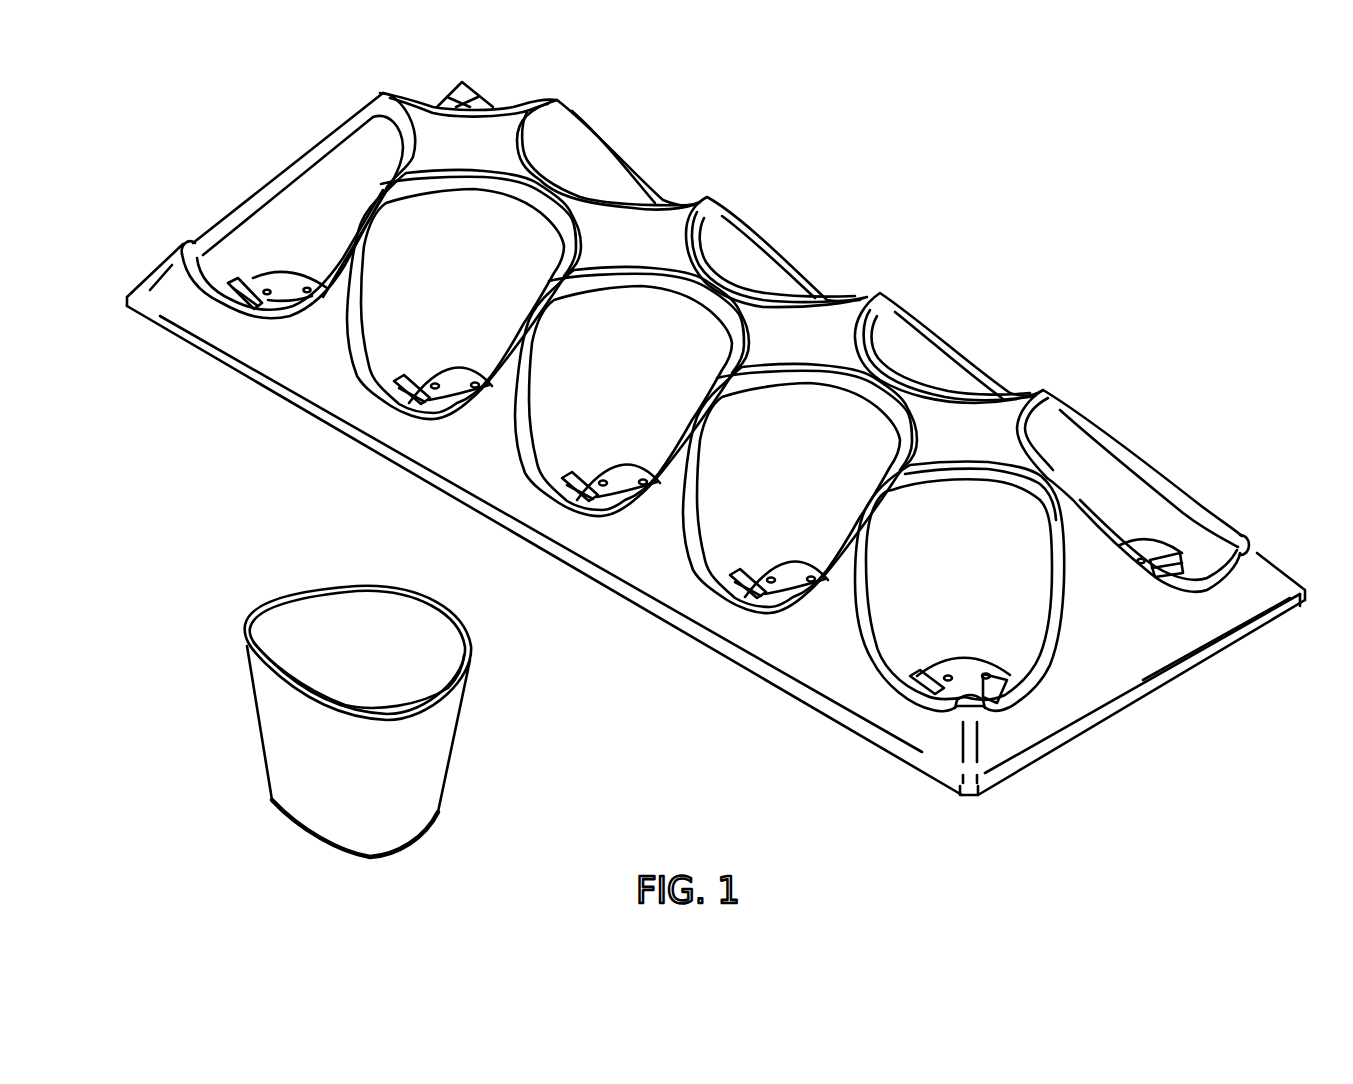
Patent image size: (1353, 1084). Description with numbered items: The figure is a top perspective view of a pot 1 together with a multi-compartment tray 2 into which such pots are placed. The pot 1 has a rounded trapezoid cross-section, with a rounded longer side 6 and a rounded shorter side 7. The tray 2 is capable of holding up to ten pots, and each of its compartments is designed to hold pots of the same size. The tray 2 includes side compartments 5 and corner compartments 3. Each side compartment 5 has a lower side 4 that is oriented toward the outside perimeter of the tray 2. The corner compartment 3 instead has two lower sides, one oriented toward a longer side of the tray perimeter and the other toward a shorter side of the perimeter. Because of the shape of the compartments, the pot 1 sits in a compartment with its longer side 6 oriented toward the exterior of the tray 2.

The pot 1 is at (362, 692).
The multi-compartment tray 2 is at (716, 455).
The corner compartment 3 is at (975, 707).
The lower side 4 is at (730, 597).
The side compartment 5 is at (785, 461).
The rounded longer side 6 is at (292, 743).
The rounded shorter side 7 is at (460, 718).